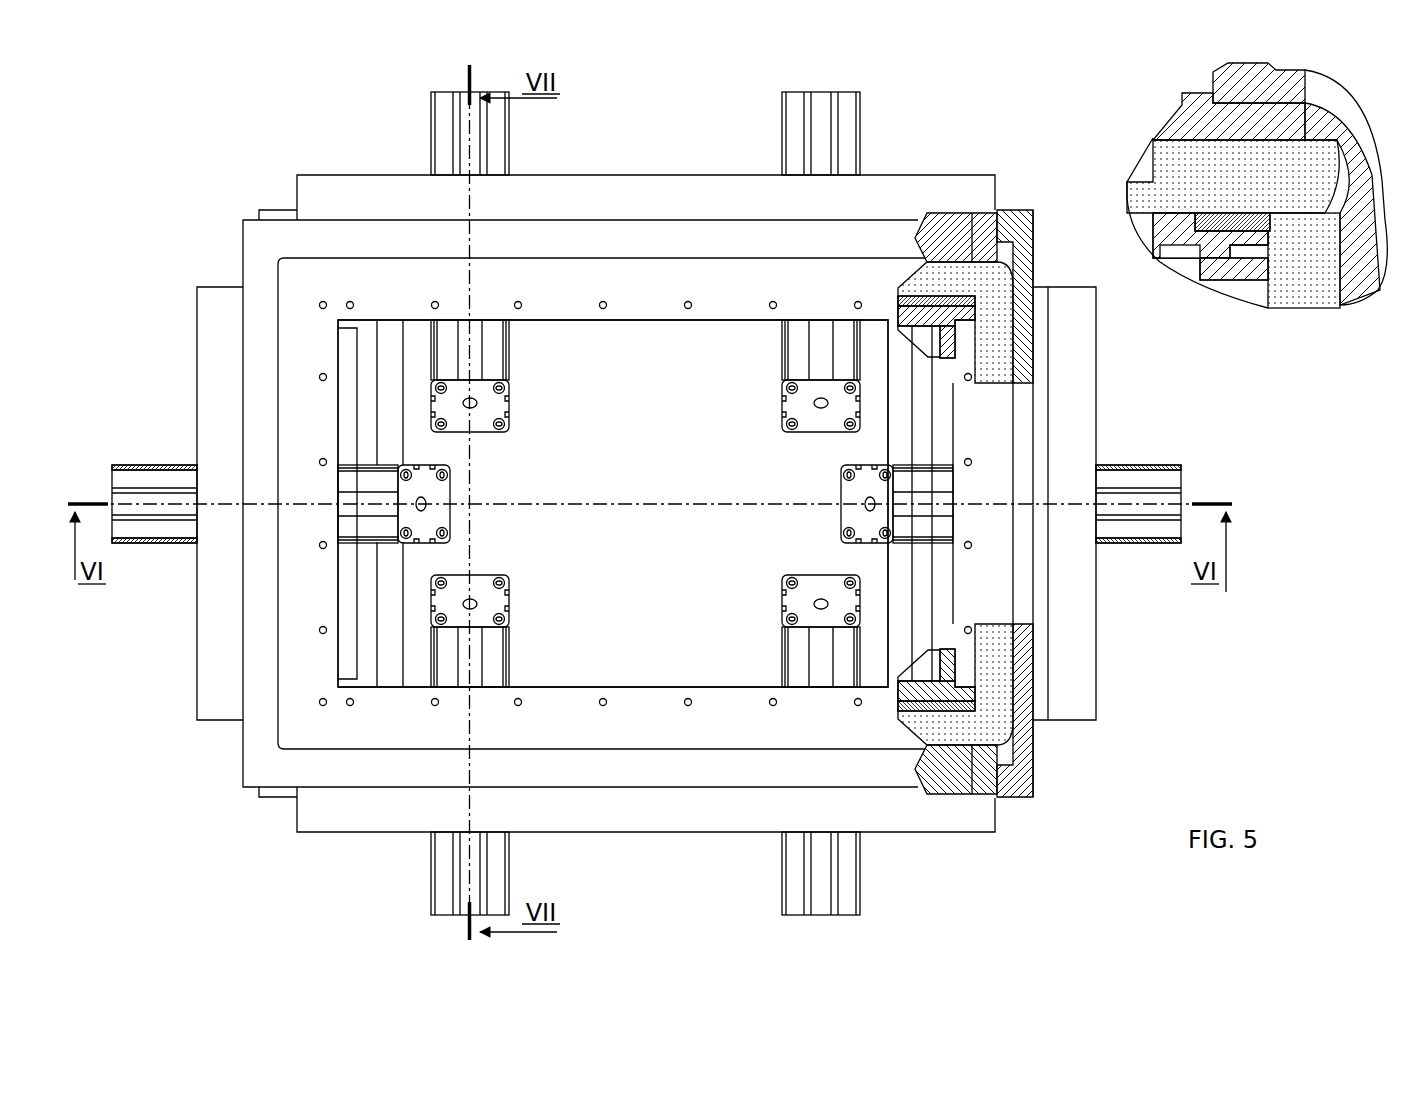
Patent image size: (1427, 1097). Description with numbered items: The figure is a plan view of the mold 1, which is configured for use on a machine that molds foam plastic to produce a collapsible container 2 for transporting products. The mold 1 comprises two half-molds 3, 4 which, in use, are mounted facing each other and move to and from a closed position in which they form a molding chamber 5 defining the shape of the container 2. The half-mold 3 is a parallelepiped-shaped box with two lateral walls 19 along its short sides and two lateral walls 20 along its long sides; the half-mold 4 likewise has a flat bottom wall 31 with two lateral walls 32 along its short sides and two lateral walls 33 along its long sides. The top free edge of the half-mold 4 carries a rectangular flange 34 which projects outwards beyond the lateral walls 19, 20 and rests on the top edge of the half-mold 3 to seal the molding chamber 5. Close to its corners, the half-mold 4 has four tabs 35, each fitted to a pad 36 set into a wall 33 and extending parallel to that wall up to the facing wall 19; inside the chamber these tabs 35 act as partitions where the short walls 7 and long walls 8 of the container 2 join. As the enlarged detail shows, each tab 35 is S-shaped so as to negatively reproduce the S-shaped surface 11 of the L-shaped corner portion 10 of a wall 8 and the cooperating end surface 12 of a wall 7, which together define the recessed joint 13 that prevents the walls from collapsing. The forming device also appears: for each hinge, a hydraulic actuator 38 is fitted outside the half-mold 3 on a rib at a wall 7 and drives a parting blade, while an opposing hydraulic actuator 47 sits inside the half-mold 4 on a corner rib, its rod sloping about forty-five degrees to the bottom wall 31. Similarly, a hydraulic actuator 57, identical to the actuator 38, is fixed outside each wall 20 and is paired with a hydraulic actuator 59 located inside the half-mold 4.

The mold 1 is at (180, 213).
The collapsible container 2 is at (960, 262).
The half-mold 3 is at (1045, 745).
The half-mold 4 is at (630, 322).
The molding chamber 5 is at (989, 348).
The wall 7 is at (1005, 365).
The wall 8 is at (972, 278).
The L-shaped corner portion 10 is at (1008, 268).
The S-shaped surface 11 is at (1008, 311).
The end surface 12 is at (987, 290).
The recessed joint 13 is at (1022, 285).
The lateral wall 19 is at (1025, 620).
The lateral wall 20 is at (940, 255).
The bottom wall 31 is at (643, 628).
The lateral wall 32 is at (958, 672).
The lateral wall 33 is at (915, 700).
The flange 34 is at (329, 735).
The tab 35 is at (960, 370).
The pad 36 is at (930, 297).
The hydraulic actuator 38 is at (165, 475).
The hydraulic actuator 47 is at (445, 494).
The hydraulic actuator 57 is at (448, 140).
The hydraulic actuator 59 is at (492, 403).